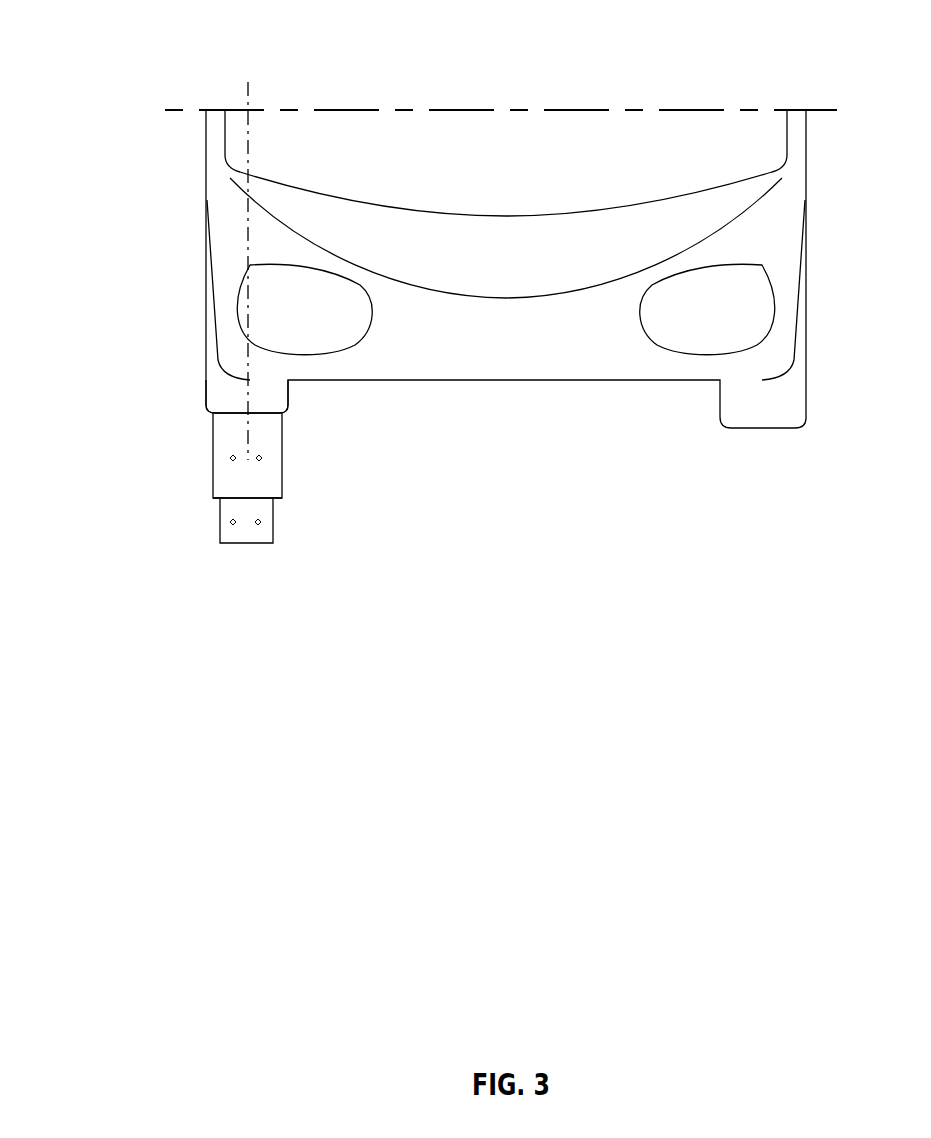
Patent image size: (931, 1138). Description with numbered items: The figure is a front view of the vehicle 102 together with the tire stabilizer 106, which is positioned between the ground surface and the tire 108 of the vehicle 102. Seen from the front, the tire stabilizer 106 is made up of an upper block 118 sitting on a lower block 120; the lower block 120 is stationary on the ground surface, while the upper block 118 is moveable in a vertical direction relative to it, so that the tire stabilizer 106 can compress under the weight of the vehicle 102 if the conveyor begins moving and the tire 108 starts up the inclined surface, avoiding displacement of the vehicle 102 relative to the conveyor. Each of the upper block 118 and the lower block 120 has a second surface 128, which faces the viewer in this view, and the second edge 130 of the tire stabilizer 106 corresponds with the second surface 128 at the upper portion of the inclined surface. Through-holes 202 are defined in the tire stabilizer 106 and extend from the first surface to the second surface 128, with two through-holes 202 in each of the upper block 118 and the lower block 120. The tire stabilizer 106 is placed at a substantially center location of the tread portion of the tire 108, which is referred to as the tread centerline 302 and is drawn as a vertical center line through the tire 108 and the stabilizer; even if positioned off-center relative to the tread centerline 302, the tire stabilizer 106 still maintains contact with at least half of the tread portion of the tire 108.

The vehicle 102 is at (707, 153).
The tire stabilizer 106 is at (257, 526).
The tire 108 is at (228, 390).
The upper block 118 is at (268, 435).
The lower block 120 is at (227, 530).
The second surface 128 is at (270, 487).
The second edge 130 is at (238, 418).
The through-hole 202 is at (233, 460).
The tread centerline 302 is at (248, 91).